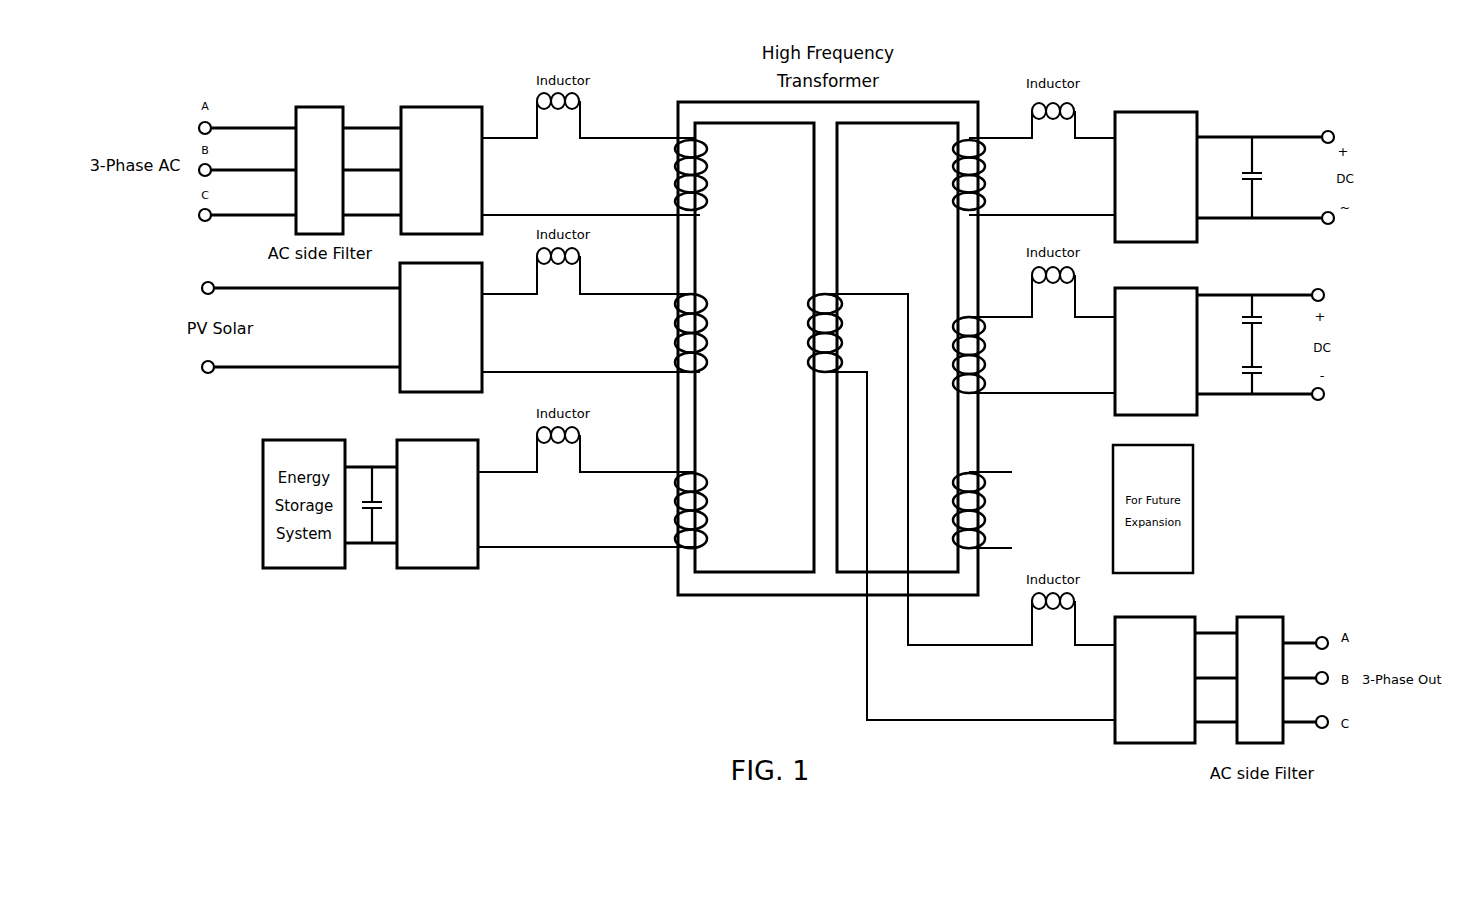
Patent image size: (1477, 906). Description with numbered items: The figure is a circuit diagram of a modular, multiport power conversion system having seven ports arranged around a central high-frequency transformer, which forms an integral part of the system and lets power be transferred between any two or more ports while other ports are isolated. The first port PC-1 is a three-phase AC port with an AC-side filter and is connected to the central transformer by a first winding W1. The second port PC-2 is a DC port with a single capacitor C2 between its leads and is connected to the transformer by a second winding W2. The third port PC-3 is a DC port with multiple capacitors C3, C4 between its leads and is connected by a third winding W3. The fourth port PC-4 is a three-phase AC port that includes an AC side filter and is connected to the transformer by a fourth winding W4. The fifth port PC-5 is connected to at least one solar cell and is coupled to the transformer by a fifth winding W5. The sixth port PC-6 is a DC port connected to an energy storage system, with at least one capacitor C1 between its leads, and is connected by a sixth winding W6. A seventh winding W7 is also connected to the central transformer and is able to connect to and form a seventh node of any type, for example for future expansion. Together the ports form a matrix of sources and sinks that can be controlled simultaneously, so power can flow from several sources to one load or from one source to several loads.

The first port PC-1 is at (441, 170).
The second port PC-2 is at (1156, 177).
The third port PC-3 is at (1156, 351).
The fourth port PC-4 is at (1155, 680).
The fifth port PC-5 is at (441, 327).
The sixth port PC-6 is at (437, 504).
The first winding W1 is at (706, 175).
The second winding W2 is at (707, 333).
The third winding W3 is at (707, 510).
The fourth winding W4 is at (952, 175).
The fifth winding W5 is at (953, 355).
The sixth winding W6 is at (953, 510).
The seventh winding W7 is at (808, 333).
The capacitor C1 is at (377, 505).
The single capacitor C2 is at (1263, 177).
The capacitor C3 is at (1262, 320).
The capacitor C4 is at (1262, 369).